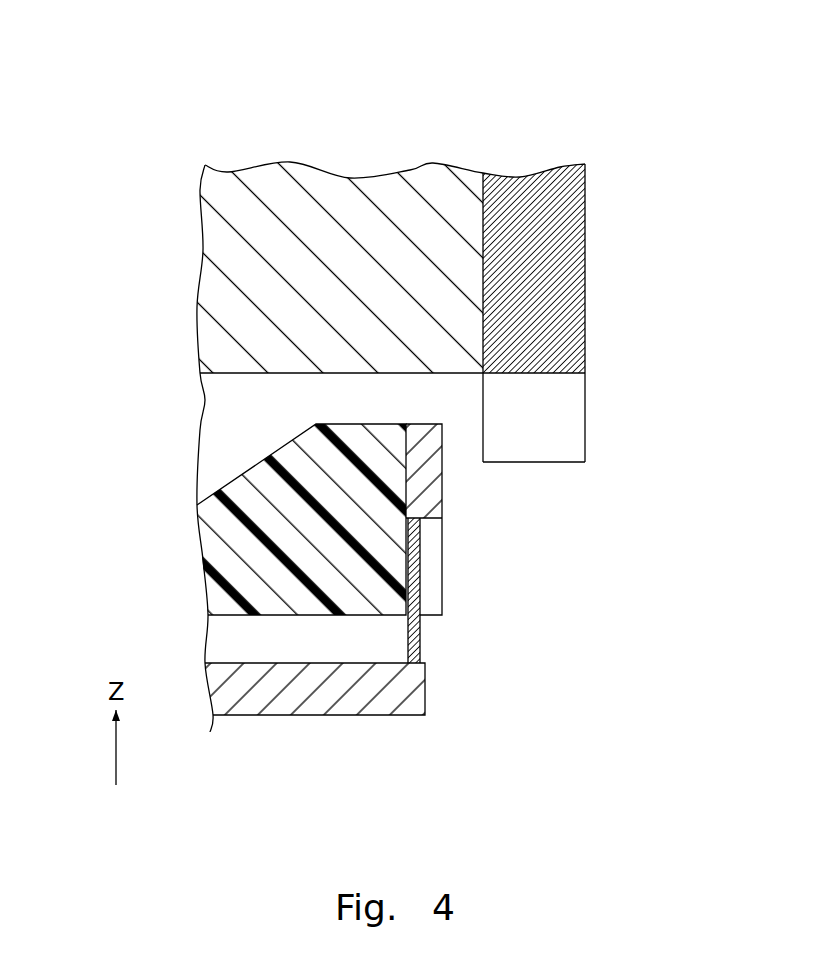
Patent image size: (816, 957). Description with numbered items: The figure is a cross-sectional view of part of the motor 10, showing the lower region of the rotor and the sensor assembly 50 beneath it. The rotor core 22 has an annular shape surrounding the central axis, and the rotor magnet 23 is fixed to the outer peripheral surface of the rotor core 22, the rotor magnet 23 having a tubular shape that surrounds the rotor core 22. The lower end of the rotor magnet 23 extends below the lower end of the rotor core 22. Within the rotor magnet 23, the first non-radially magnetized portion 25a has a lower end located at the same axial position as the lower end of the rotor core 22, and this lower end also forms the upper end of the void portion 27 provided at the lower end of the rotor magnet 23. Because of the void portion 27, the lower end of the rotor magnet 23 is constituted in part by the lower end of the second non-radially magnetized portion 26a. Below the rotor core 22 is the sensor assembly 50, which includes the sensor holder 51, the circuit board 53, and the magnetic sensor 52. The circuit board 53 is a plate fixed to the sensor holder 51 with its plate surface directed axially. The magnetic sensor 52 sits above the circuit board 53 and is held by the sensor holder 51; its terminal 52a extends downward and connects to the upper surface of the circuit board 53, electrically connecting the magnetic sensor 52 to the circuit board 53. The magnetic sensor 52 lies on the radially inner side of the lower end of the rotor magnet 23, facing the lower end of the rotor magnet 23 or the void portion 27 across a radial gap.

The motor 10 is at (443, 366).
The rotor core 22 is at (335, 197).
The rotor magnet 23 is at (586, 313).
The first non-radially magnetized portion 25a is at (583, 298).
The second non-radially magnetized portion 26a is at (585, 423).
The void portion 27 is at (583, 460).
The sensor assembly 50 is at (323, 634).
The sensor holder 51 is at (220, 565).
The magnetic sensor 52 is at (470, 543).
The terminal 52a is at (421, 633).
The circuit board 53 is at (318, 698).